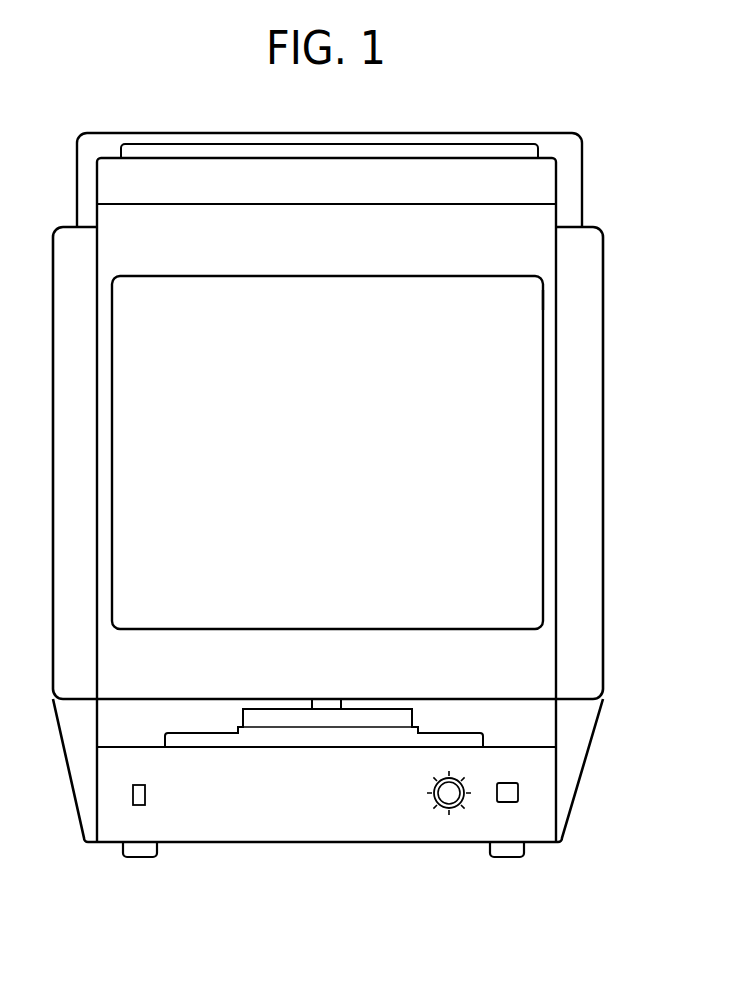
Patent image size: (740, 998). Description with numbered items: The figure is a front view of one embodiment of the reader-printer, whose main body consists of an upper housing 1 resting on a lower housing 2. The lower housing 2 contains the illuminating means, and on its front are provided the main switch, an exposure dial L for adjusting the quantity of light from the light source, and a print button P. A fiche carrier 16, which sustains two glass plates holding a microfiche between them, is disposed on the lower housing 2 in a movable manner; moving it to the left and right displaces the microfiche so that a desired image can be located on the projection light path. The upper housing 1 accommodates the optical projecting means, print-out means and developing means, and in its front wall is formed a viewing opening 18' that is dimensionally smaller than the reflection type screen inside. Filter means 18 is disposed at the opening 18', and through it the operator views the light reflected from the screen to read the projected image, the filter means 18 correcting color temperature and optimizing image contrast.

The upper housing 1 is at (583, 146).
The lower housing 2 is at (330, 778).
The fiche carrier 16 is at (412, 717).
The filter means 18 is at (356, 452).
The viewing opening 18' is at (580, 299).
The exposure dial L is at (437, 803).
The print button P is at (508, 792).